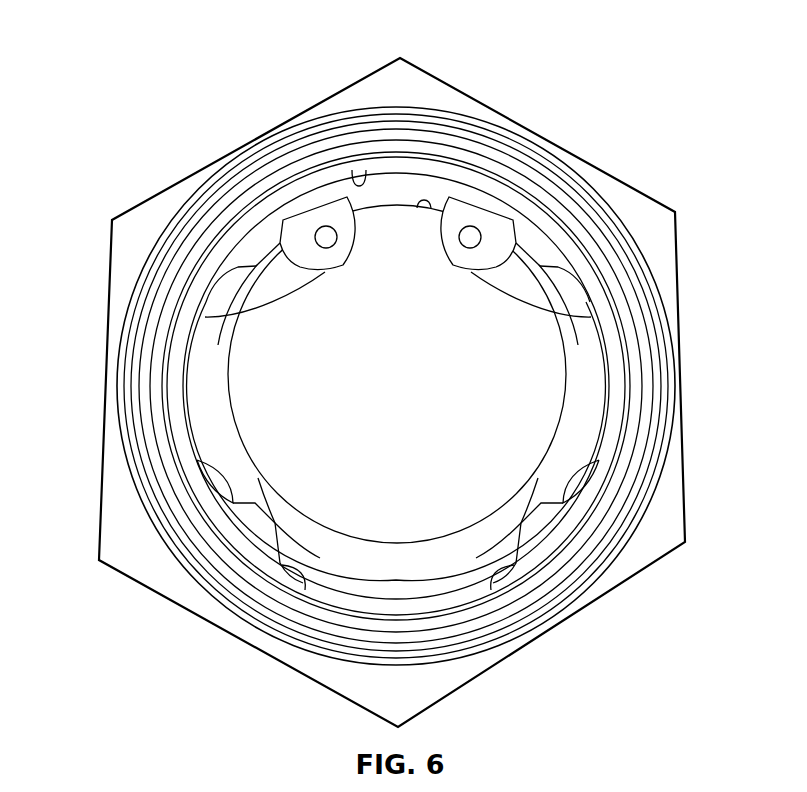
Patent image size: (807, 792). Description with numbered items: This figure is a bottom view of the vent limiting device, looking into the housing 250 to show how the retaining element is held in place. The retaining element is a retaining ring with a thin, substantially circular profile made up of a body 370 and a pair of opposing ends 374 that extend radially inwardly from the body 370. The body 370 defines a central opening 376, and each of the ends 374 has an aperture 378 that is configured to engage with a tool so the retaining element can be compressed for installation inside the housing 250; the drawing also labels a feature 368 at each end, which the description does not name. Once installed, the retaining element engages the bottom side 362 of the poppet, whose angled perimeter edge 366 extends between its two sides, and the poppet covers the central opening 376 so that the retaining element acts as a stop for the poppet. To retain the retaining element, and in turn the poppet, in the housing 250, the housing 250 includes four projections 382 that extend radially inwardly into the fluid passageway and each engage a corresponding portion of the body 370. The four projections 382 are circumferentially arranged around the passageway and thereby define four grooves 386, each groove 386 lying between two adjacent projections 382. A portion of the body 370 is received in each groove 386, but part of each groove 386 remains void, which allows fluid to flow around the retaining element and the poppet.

The housing 250 is at (666, 530).
The second side 362 is at (397, 374).
The perimeter edge 366 is at (424, 202).
The hole 368 is at (322, 237).
The body 370 is at (573, 340).
The ends 374 is at (212, 318).
The central opening 376 is at (565, 377).
The aperture 378 is at (324, 230).
The projections 382 is at (272, 258).
The grooves 386 is at (370, 170).